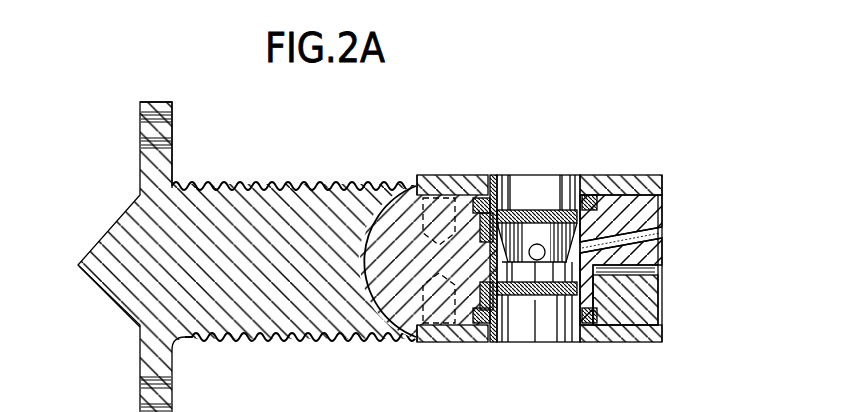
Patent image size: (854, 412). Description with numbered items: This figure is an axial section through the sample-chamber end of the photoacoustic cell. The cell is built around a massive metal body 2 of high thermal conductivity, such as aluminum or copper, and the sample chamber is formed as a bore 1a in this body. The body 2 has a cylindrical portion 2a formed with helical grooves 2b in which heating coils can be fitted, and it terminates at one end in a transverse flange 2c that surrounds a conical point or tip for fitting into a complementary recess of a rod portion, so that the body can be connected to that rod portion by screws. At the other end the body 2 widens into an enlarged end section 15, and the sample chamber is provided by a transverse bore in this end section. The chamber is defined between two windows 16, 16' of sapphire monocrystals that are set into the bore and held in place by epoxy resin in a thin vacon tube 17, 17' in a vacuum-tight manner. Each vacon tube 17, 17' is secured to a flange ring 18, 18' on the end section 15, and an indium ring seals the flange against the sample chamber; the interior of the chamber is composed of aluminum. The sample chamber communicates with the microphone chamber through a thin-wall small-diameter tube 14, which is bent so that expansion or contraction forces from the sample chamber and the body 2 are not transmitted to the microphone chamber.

The massive metal body 2 is at (138, 392).
The cylindrical portion 2a is at (332, 232).
The helical grooves 2b is at (286, 183).
The transverse flange 2c is at (172, 158).
The thin-wall small-diameter tube 14 is at (649, 233).
The enlarged end section 15 is at (537, 197).
The window 16 is at (548, 225).
The window 16' is at (547, 325).
The thin vacon tube 17 is at (471, 227).
The thin vacon tube 17' is at (483, 334).
The flange ring 18 is at (551, 226).
The flange ring 18' is at (570, 322).
The bore 1a is at (596, 293).